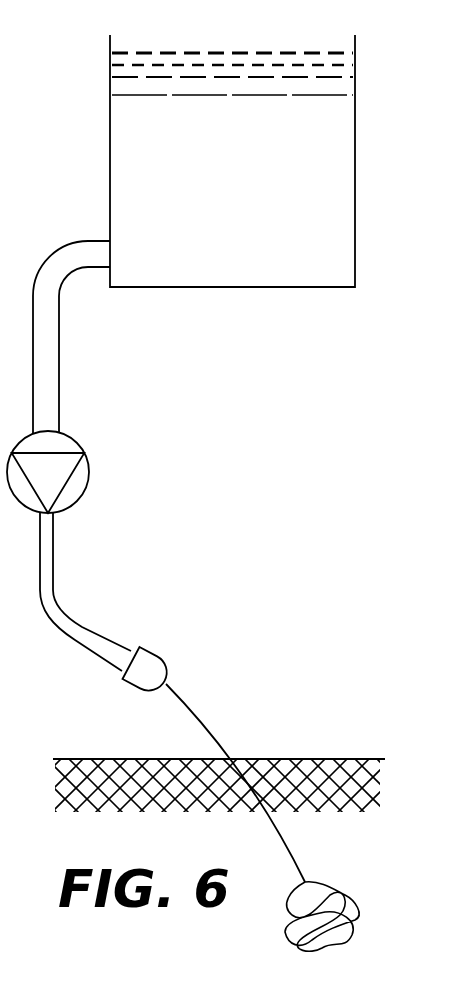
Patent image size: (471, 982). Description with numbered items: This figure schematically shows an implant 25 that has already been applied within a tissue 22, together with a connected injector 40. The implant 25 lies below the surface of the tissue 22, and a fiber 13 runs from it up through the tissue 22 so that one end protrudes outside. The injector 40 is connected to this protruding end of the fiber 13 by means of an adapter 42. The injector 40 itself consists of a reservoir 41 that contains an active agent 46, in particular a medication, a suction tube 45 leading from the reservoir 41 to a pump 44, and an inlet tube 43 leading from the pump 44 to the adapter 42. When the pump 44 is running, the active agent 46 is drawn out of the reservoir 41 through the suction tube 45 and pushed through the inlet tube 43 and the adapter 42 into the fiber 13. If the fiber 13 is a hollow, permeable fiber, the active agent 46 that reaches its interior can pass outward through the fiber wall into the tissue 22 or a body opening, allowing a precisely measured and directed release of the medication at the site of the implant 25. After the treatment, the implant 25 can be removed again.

The injector 40 is at (55, 220).
The reservoir 41 is at (110, 147).
The active agent 46 is at (135, 112).
The suction tube 45 is at (55, 368).
The pump 44 is at (83, 453).
The inlet tube 43 is at (48, 585).
The adapter 42 is at (152, 666).
The fiber 13 is at (208, 722).
The tissue 22 is at (91, 790).
The implant 25 is at (342, 888).